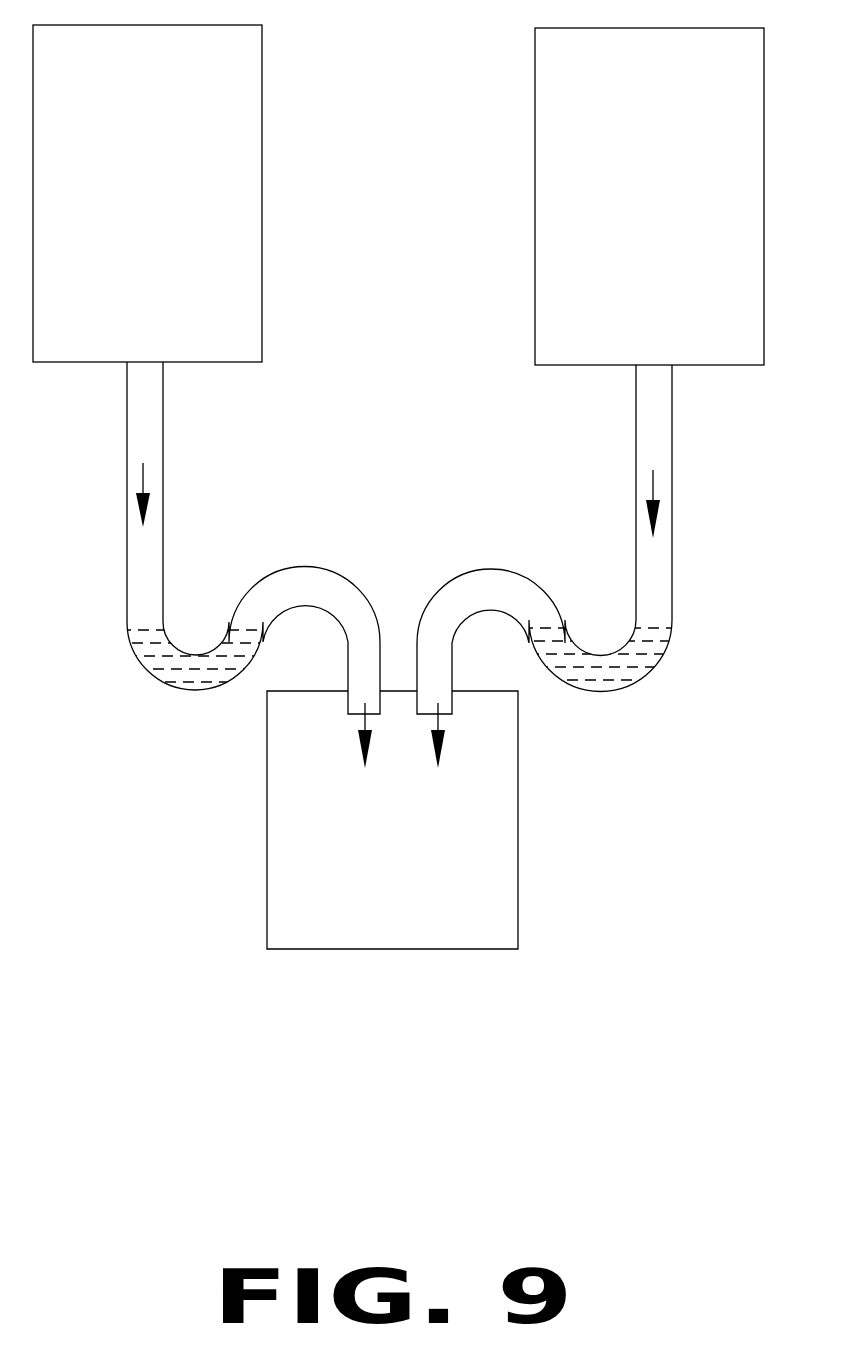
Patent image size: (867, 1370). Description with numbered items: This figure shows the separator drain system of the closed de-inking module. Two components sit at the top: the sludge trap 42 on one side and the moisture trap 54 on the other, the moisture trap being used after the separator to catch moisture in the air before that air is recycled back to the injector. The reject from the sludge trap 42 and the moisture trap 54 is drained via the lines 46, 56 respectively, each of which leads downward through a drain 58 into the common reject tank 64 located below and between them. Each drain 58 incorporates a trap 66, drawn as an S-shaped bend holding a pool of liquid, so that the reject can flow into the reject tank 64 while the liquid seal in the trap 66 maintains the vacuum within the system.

The sludge trap 42 is at (202, 162).
The moisture trap 54 is at (703, 166).
The drain line from sludge trap 46 is at (142, 362).
The drain line from moisture trap 56 is at (654, 365).
The drain 58 is at (163, 485).
The reject tank 64 is at (440, 898).
The trap 66 is at (198, 690).